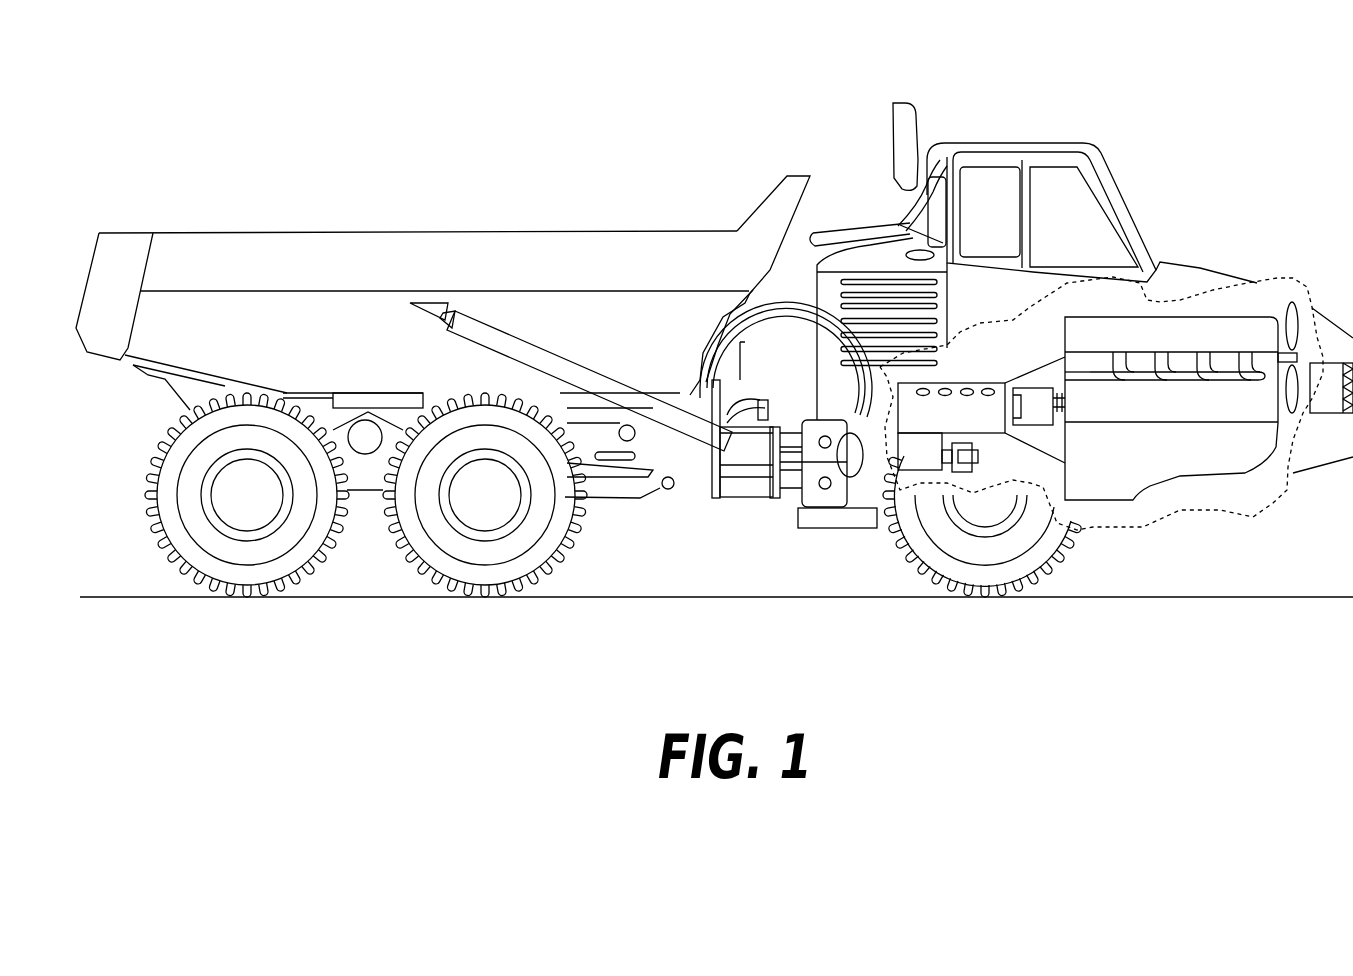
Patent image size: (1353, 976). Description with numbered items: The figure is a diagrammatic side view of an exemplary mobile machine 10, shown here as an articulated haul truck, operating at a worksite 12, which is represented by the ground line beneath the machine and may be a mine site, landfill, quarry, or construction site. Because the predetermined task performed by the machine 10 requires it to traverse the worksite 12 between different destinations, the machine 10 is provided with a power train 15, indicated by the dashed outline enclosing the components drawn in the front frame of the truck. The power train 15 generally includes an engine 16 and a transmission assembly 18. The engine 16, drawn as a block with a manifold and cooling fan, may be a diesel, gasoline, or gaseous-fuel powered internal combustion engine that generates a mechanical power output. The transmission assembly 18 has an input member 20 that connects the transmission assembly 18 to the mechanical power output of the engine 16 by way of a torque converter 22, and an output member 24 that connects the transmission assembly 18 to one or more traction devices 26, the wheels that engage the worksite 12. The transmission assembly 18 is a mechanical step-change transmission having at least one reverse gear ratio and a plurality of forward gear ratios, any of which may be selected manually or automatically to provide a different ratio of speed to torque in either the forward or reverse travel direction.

The mobile machine 10 is at (1122, 150).
The worksite 12 is at (717, 640).
The power train 15 is at (1210, 492).
The engine 16 is at (1177, 414).
The transmission assembly 18 is at (978, 368).
The input member 20 is at (1027, 425).
The torque converter 22 is at (1053, 438).
The output member 24 is at (963, 472).
The traction device 26 is at (920, 593).